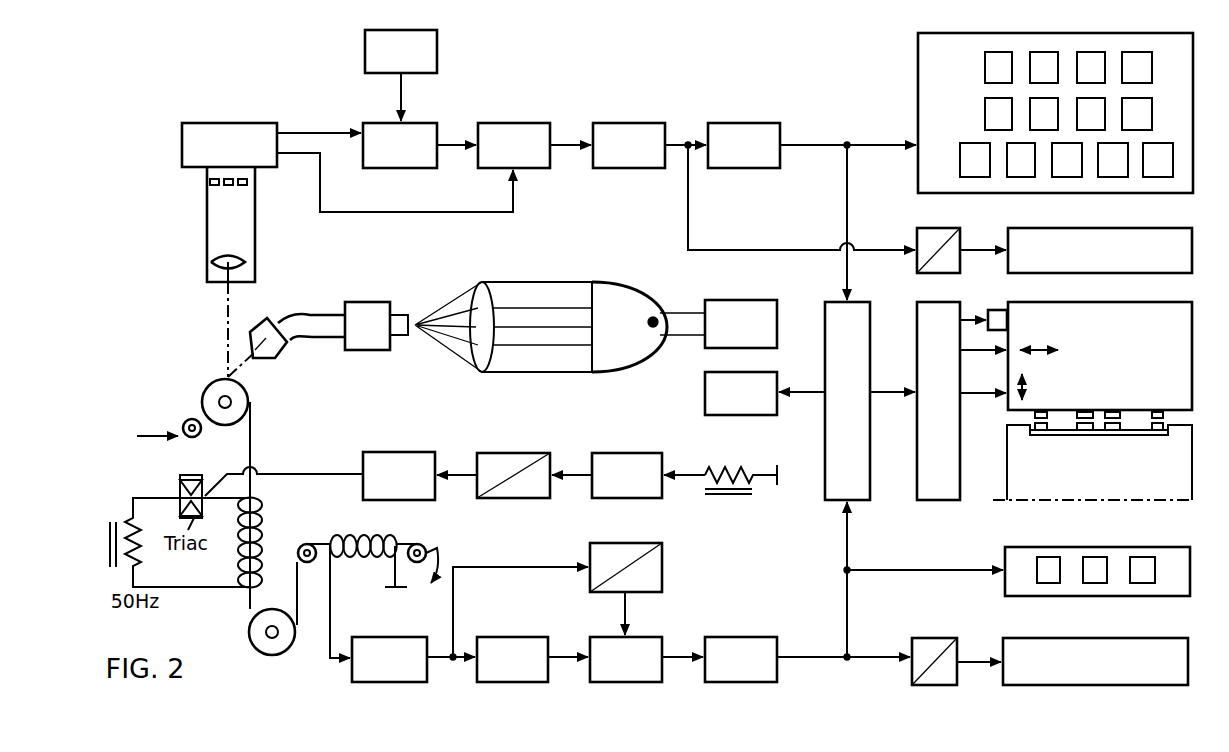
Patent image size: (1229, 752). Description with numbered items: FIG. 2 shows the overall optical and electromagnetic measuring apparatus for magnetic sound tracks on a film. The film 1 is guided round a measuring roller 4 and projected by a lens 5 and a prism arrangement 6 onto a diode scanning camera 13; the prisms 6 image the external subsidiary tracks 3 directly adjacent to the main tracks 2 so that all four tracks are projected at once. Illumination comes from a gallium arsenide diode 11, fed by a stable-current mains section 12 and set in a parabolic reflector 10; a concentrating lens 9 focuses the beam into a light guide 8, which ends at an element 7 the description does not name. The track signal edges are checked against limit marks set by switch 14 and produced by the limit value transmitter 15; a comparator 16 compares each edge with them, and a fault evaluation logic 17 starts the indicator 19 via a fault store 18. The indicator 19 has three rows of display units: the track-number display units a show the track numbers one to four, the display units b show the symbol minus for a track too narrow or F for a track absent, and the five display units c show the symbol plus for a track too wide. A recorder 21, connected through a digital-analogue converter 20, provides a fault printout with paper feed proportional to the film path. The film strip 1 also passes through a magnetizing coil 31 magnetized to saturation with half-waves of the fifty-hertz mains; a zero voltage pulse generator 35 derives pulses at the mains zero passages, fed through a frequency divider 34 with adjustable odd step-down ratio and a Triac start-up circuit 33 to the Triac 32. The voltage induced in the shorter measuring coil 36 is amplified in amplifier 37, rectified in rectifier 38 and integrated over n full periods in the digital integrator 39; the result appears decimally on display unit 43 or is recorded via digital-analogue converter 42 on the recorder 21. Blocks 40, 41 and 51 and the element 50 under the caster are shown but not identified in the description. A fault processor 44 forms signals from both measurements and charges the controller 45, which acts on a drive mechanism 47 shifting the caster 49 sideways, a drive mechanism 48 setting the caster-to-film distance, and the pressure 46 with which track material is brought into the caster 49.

The film 1 is at (1052, 437).
The main track 2 is at (1084, 418).
The subsidiary track 3 is at (1045, 422).
The measuring roller 4 is at (250, 397).
The lens 5 is at (225, 256).
The prism arrangement 6 is at (258, 185).
The prism 7 is at (285, 346).
The light guide 8 is at (320, 332).
The concentrating lens 9 is at (477, 353).
The parabolic reflector 10 is at (646, 347).
The gallium arsenide diode 11 is at (652, 317).
The stable-current mains section 12 is at (718, 324).
The diode scanning camera 13 is at (347, 167).
The switch 14 is at (401, 75).
The limit value transmitter 15 is at (419, 145).
The comparator 16 is at (534, 145).
The fault evaluation logic 17 is at (754, 186).
The fault store 18 is at (812, 211).
The indicator 19 is at (918, 178).
The digital-analogue converter 20 is at (948, 229).
The recorder 21 is at (1128, 273).
The magnetizing coil 31 is at (258, 508).
The Triac 32 is at (181, 477).
The Triac start up circuit 33 is at (320, 476).
The frequency divider 34 is at (490, 499).
The zero voltage pulse generator 35 is at (664, 490).
The measuring coil 36 is at (372, 557).
The amplifier 37 is at (470, 624).
The rectifier 38 is at (532, 659).
The digital integrator 39 is at (646, 659).
The store 40 is at (807, 659).
The divider n/1 41 is at (590, 556).
The digital-analogue converter 42 is at (912, 646).
The display unit 43 is at (1005, 558).
The fault processor 44 is at (847, 481).
The controller 45 is at (938, 401).
The pressure control 46 is at (984, 318).
The drive mechanism 47 is at (977, 352).
The drive mechanism 48 is at (977, 396).
The caster 49 is at (1105, 313).
The table 50 is at (1017, 472).
The register 51 is at (741, 393).
The track number display units a is at (985, 68).
The narrow/absent display units b is at (985, 113).
The wide display units c is at (960, 158).